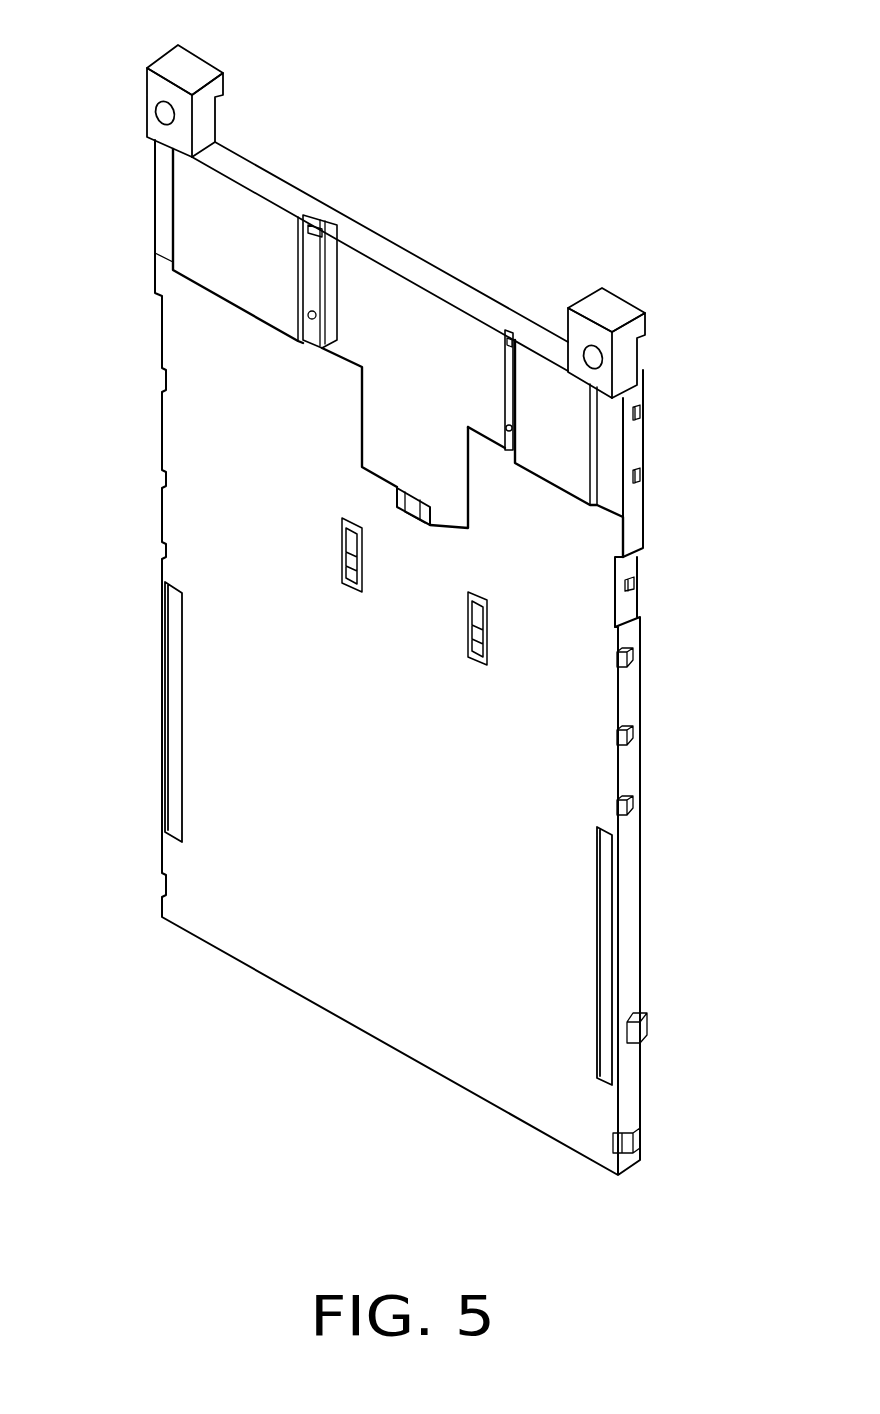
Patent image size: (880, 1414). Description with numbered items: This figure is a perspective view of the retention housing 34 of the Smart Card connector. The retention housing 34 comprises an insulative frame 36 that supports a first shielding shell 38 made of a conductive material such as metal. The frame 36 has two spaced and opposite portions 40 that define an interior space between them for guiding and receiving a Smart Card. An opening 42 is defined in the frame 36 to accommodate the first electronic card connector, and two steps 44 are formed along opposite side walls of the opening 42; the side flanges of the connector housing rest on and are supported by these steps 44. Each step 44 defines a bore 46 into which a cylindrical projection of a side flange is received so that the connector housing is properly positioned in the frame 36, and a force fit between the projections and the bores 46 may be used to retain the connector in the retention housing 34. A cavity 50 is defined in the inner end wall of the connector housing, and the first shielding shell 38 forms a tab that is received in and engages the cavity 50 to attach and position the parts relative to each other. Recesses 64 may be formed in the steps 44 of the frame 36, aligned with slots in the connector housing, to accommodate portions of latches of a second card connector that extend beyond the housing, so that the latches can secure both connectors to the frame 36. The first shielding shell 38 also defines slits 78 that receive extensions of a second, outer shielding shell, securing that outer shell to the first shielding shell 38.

The retention housing 34 is at (528, 67).
The insulative frame 36 is at (622, 302).
The first shielding shell 38 is at (540, 757).
The spaced and opposite portions 40 is at (233, 220).
The opening 42 is at (407, 390).
The steps 44 is at (322, 317).
The bore 46 is at (330, 312).
The cavity 50 is at (432, 527).
The recesses 64 is at (310, 265).
The slits 78 is at (175, 715).